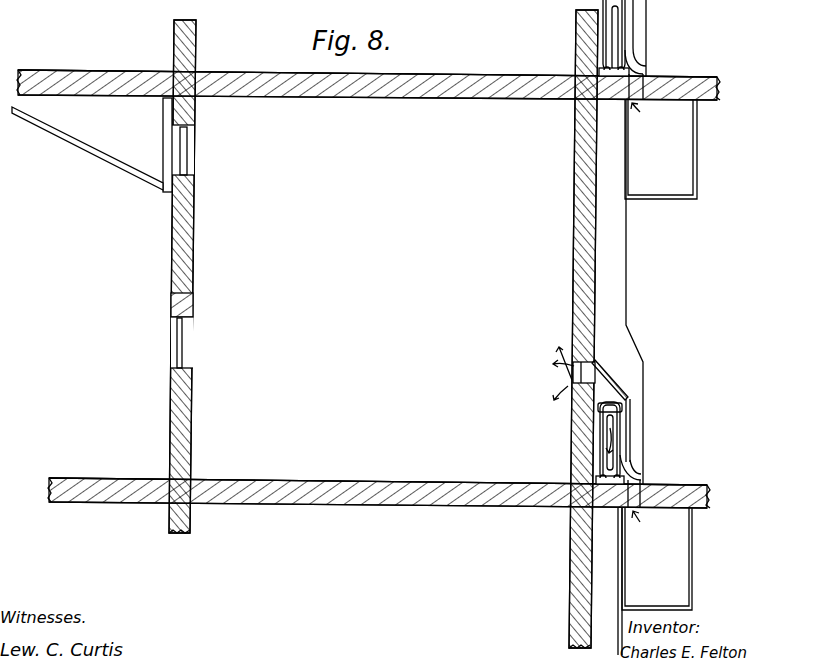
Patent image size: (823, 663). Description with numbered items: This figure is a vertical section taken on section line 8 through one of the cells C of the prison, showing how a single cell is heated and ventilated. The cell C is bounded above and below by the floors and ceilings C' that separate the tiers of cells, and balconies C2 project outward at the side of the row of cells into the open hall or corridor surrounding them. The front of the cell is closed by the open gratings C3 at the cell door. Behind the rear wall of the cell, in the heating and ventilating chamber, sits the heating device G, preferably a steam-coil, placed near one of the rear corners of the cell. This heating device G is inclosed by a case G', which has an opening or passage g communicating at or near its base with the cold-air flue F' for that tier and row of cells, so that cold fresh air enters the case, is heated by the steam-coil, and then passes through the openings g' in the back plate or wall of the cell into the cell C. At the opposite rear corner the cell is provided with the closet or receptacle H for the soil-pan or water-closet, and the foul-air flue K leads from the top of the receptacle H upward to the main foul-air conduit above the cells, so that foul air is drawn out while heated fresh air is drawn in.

The closet or receptacle H is at (174, 40).
The cells C is at (387, 325).
The floors and ceilings C' is at (380, 263).
The balconies C2 is at (62, 58).
The open gratings C3 is at (183, 325).
The heating device G is at (571, 242).
The case G' is at (645, 240).
The opening or passage g is at (663, 279).
The openings in back plate g' is at (545, 377).
The foul-air flue K is at (608, 278).
The cold air duct F' is at (647, 355).
The section line 8 is at (247, 0).